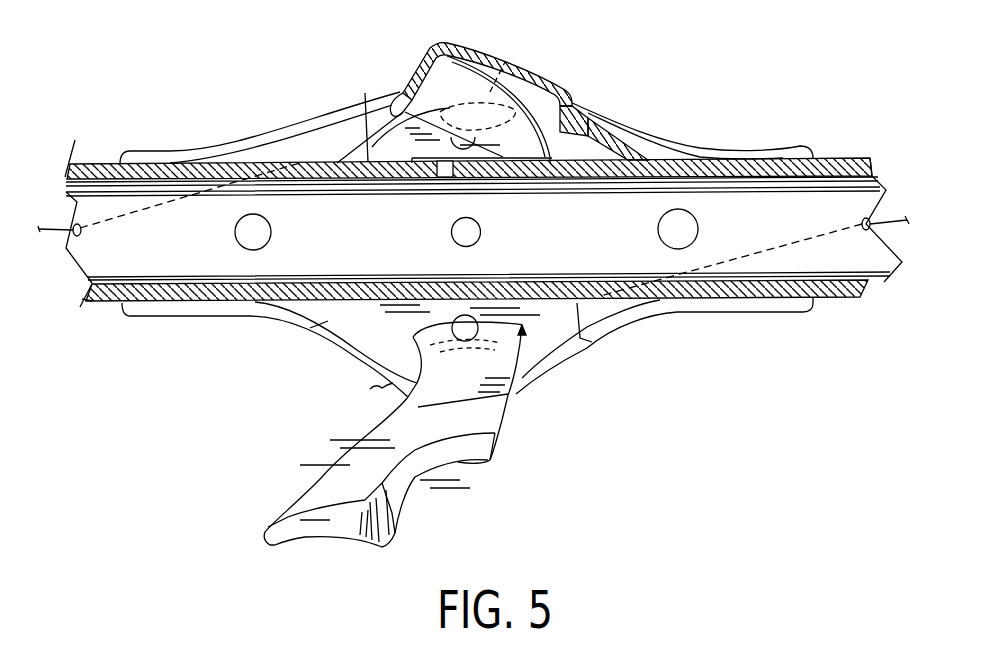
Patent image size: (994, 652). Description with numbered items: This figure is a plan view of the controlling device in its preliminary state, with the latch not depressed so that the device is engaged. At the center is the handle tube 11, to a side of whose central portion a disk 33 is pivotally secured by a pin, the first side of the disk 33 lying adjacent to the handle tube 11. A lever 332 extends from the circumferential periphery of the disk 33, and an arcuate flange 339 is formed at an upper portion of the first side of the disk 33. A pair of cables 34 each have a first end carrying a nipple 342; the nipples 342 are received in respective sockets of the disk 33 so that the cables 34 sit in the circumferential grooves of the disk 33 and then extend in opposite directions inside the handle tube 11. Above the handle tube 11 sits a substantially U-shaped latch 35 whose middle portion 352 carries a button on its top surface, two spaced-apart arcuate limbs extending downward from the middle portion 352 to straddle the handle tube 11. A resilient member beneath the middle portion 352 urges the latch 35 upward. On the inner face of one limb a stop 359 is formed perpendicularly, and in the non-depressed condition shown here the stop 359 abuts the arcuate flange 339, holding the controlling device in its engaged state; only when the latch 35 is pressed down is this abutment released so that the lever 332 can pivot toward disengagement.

The handle tube 11 is at (788, 162).
The disk 33 is at (387, 325).
The cables 34 is at (327, 152).
The latch 35 is at (636, 143).
The lever 332 is at (455, 433).
The arcuate flange 339 is at (383, 141).
The nipple 342 is at (364, 396).
The middle portion 352 is at (565, 88).
The stop 359 is at (513, 57).